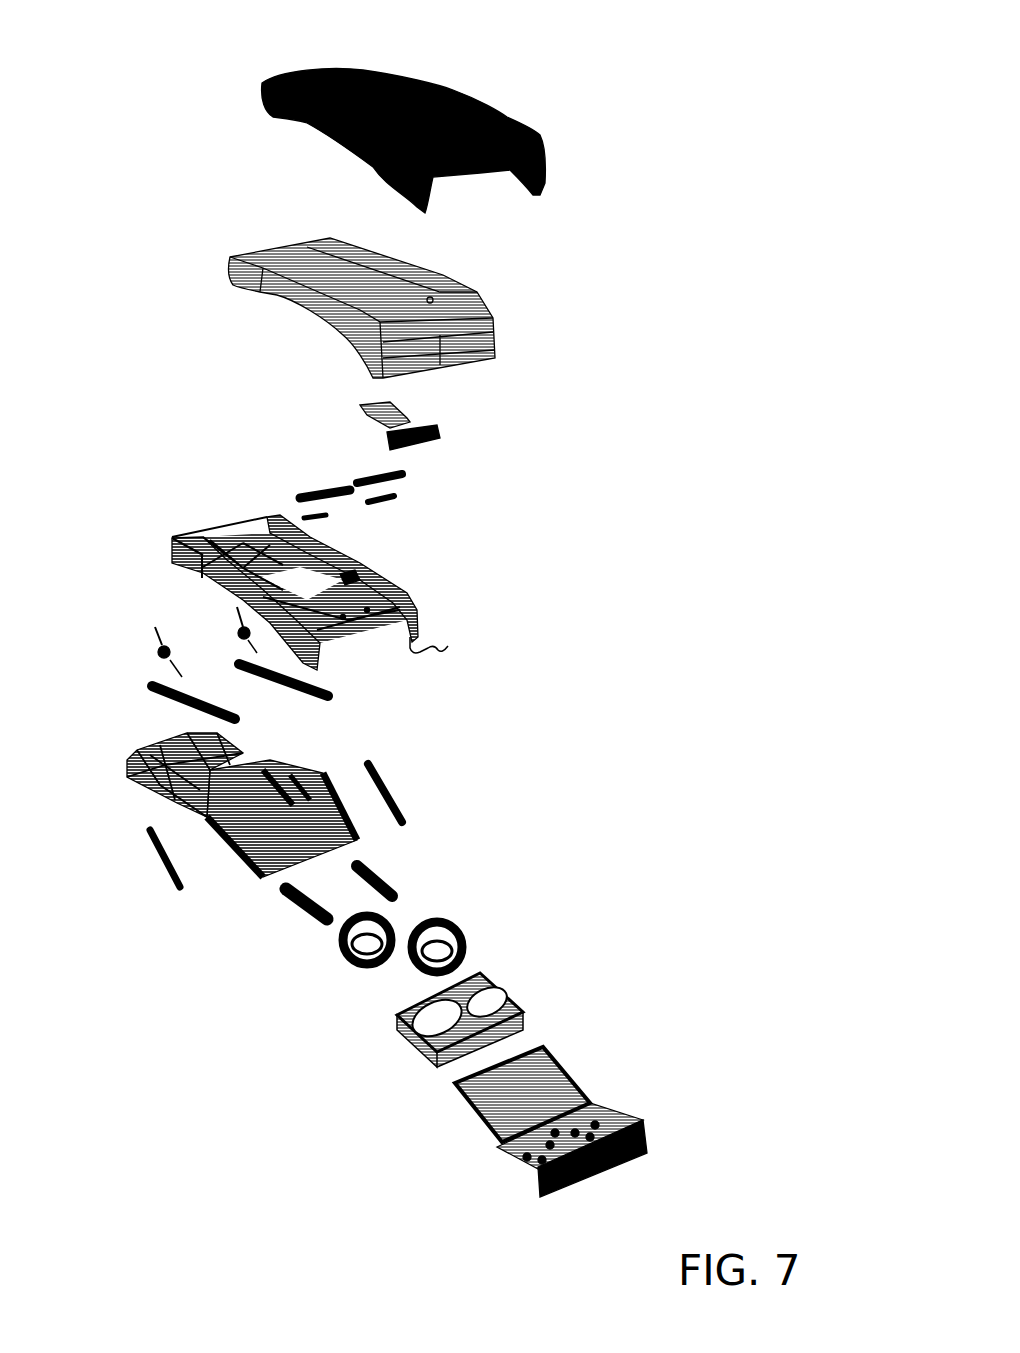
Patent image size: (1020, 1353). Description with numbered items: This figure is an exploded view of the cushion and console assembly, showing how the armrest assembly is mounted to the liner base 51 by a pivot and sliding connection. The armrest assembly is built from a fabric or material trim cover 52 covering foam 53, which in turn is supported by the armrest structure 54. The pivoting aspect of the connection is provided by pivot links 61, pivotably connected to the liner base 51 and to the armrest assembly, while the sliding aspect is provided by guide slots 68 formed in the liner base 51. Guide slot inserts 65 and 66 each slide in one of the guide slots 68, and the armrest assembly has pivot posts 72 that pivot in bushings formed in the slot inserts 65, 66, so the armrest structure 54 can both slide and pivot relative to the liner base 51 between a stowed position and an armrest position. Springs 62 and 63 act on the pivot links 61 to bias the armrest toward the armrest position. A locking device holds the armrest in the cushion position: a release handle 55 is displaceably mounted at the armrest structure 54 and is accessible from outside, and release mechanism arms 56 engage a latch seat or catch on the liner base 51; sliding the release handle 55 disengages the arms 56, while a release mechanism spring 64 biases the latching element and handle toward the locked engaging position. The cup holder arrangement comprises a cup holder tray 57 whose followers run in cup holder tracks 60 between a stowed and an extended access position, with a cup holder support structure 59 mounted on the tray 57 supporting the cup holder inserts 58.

The liner base 51 is at (263, 885).
The trim cover 52 is at (458, 92).
The foam 53 is at (477, 293).
The armrest structure 54 is at (417, 602).
The release handle 55 is at (440, 431).
The release mechanism arms 56 is at (404, 475).
The cup holder tray 57 is at (590, 1103).
The cup holder inserts 58 is at (467, 938).
The cup holder support structure 59 is at (523, 1010).
The cup holder tracks 60 is at (393, 882).
The pivot links 61 is at (330, 690).
The spring 62 is at (236, 625).
The spring 63 is at (153, 650).
The release mechanism spring 64 is at (395, 497).
The guide slot insert 65 is at (390, 778).
The guide slot insert 66 is at (167, 888).
The guide slots 68 is at (243, 850).
The pivot posts 72 is at (447, 646).